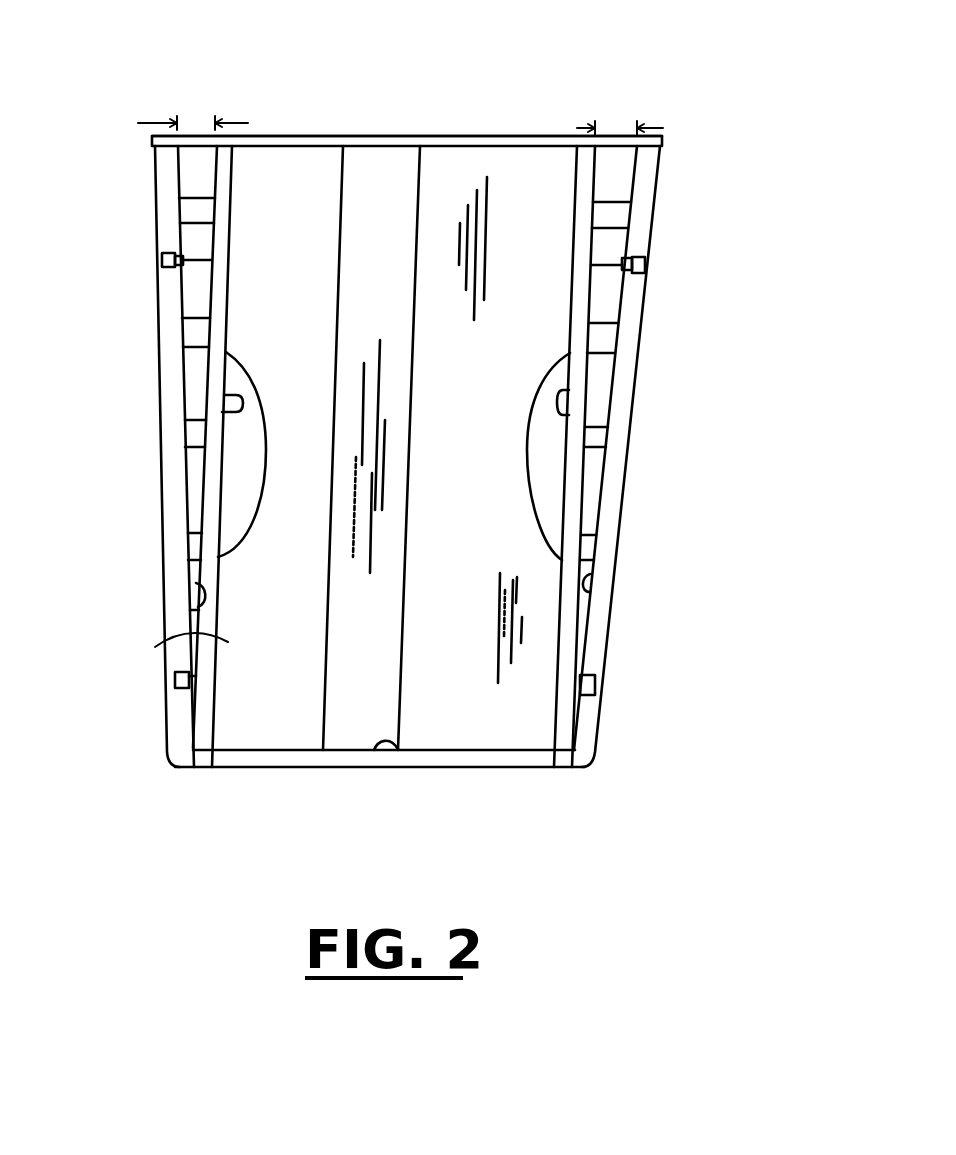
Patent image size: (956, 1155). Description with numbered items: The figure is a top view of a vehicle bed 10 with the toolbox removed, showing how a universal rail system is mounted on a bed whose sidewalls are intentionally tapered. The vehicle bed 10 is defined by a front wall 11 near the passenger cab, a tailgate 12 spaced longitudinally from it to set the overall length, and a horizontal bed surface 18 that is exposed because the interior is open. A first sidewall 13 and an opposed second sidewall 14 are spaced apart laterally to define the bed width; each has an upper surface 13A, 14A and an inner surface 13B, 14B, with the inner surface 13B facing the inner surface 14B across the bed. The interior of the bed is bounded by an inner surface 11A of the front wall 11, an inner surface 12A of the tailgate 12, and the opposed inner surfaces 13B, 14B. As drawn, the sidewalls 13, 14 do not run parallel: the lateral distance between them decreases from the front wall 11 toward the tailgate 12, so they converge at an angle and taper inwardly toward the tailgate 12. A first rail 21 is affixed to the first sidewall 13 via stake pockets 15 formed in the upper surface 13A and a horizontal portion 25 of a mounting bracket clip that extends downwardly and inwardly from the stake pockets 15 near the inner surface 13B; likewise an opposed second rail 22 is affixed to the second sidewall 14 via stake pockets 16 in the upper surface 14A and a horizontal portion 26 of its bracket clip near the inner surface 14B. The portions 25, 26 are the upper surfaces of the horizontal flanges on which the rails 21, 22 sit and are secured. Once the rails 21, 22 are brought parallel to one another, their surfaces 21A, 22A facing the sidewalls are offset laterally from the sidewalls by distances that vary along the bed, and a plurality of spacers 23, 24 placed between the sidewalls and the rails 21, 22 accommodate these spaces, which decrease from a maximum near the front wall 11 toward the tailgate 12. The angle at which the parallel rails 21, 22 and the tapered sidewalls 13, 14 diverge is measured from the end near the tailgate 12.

The vehicle bed 10 is at (456, 452).
The front wall 11 is at (380, 137).
The inner surface of the front wall 11A is at (322, 140).
The tailgate 12 is at (325, 768).
The inner surface of the tailgate 12A is at (393, 770).
The first sidewall 13 is at (163, 537).
The upper surface of the first sidewall 13A is at (178, 553).
The inner surface of the first sidewall 13B is at (193, 607).
The second sidewall 14 is at (622, 498).
The upper surface of the second sidewall 14A is at (608, 522).
The inner surface of the second sidewall 14B is at (593, 592).
The stake pockets 15 is at (172, 674).
The stake pockets 16 is at (597, 682).
The bed surface 18 is at (466, 180).
The first rail 21 is at (217, 377).
The surface of the first rail 21A is at (232, 403).
The second rail 22 is at (582, 367).
The surface of the second rail 22A is at (570, 410).
The spacers 23 is at (197, 213).
The spacers 24 is at (612, 218).
The horizontal portion of the bracket clip 25 is at (203, 265).
The horizontal portion of the bracket clip 26 is at (610, 257).